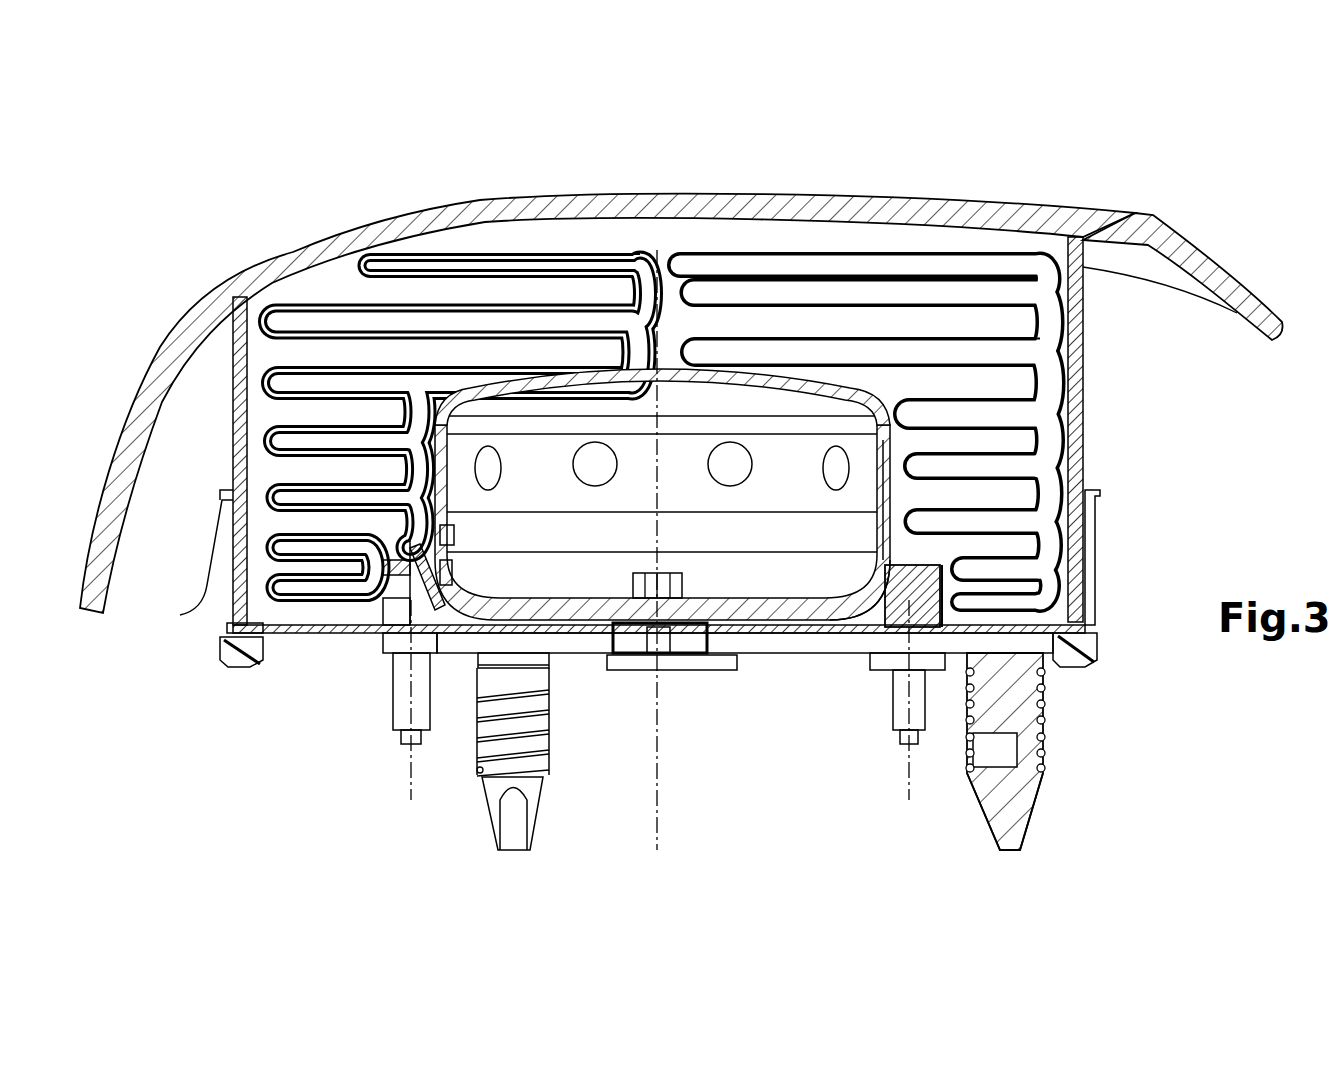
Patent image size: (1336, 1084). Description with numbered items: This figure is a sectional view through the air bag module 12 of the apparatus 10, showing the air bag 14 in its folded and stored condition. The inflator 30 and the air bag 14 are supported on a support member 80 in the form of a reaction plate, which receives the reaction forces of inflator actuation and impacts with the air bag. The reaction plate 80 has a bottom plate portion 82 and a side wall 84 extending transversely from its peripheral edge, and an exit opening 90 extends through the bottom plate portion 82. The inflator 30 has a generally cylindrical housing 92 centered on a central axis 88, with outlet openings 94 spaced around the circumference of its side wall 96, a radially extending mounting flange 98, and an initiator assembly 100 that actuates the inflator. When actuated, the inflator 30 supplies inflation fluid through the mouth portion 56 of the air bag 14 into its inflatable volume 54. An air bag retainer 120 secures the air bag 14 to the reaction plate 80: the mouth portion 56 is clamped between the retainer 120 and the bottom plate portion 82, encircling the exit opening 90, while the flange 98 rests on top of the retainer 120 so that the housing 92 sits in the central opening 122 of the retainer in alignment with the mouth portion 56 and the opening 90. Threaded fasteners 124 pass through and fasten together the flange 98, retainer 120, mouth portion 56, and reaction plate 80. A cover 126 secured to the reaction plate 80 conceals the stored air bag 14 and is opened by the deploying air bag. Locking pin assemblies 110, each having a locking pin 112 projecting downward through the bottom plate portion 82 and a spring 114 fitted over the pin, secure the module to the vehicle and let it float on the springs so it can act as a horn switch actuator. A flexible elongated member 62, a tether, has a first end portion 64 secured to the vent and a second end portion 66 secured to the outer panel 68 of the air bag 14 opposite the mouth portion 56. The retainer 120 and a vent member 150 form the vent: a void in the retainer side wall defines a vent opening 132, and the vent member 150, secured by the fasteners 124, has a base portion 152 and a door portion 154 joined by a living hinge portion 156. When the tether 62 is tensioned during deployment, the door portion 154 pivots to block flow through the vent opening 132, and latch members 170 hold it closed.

The cooking appliance 10 is at (1243, 238).
The air bag module 12 is at (1192, 168).
The air bag 14 is at (845, 245).
The inflator 30 is at (835, 385).
The inflatable volume 54 is at (676, 273).
The mouth portion 56 is at (440, 628).
The flexible elongated member 62 is at (265, 305).
The first end portion 64 is at (380, 625).
The second end portion 66 is at (450, 253).
The outer panel 68 is at (655, 250).
The support member 80 is at (225, 612).
The bottom plate portion 82 is at (268, 642).
The side wall 84 is at (224, 586).
The central axis 88 is at (668, 770).
The exit opening 90 is at (785, 655).
The housing 92 is at (628, 378).
The outlet openings 94 is at (490, 470).
The side wall 96 is at (880, 500).
The mounting flange 98 is at (935, 577).
The initiator assembly 100 is at (640, 660).
The locking pin assemblies 110 is at (585, 803).
The locking pin 112 is at (512, 820).
The spring 114 is at (545, 735).
The air bag retainer 120 is at (942, 606).
The central opening 122 is at (855, 610).
The threaded fasteners 124 is at (420, 717).
The cover 126 is at (840, 375).
The vent opening 132 is at (398, 612).
The vent member 150 is at (390, 560).
The base portion 152 is at (412, 560).
The door portion 154 is at (447, 572).
The hinge portion 156 is at (440, 530).
The latch members 170 is at (413, 618).